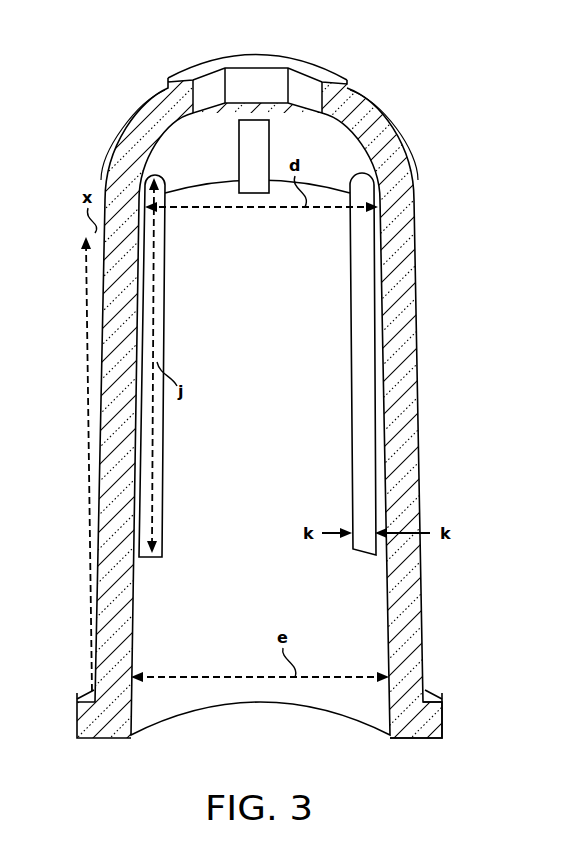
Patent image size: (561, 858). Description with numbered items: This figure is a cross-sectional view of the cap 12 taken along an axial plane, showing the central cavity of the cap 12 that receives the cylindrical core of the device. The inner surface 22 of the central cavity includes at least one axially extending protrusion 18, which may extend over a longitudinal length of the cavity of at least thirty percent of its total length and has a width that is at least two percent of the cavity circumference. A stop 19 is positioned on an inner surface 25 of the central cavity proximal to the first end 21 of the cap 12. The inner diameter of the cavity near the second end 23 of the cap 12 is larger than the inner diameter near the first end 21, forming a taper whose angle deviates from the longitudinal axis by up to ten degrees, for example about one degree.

The cap 12 is at (100, 78).
The axially extending protrusion 18 is at (166, 287).
The stop 19 is at (248, 196).
The first end 21 is at (318, 76).
The inner surface 22 is at (268, 443).
The second end 23 is at (428, 699).
The inner surface 25 is at (186, 168).